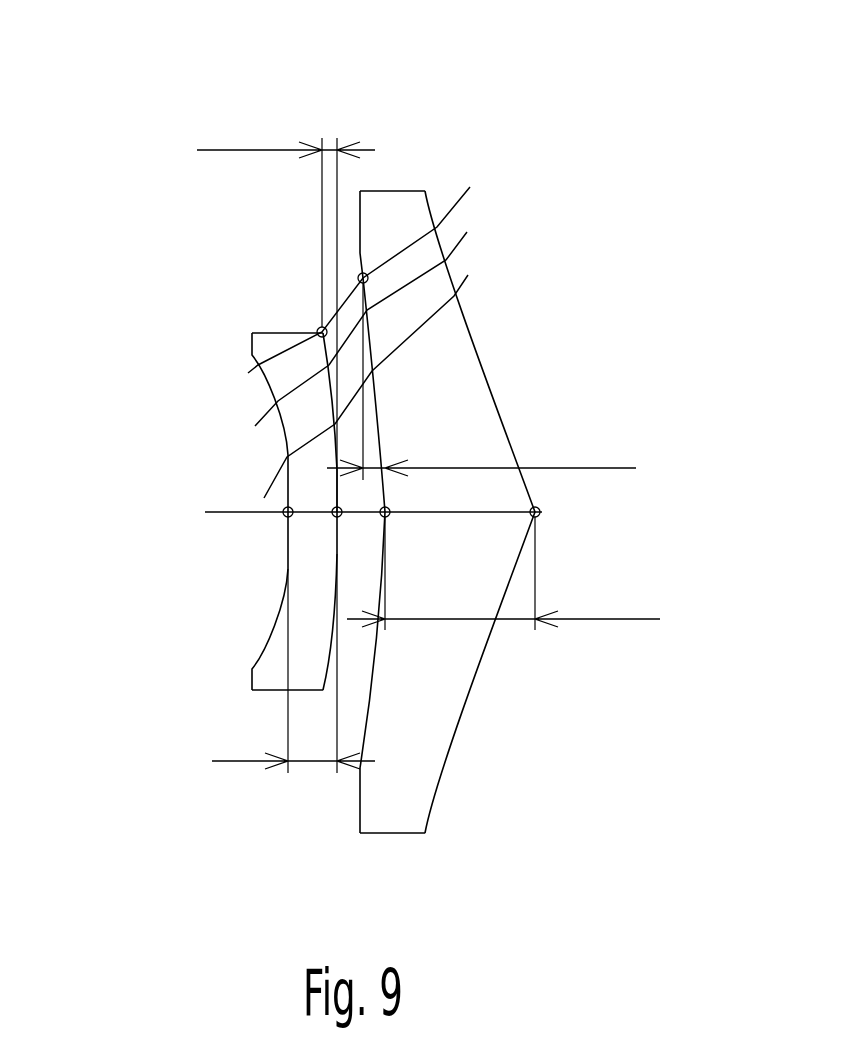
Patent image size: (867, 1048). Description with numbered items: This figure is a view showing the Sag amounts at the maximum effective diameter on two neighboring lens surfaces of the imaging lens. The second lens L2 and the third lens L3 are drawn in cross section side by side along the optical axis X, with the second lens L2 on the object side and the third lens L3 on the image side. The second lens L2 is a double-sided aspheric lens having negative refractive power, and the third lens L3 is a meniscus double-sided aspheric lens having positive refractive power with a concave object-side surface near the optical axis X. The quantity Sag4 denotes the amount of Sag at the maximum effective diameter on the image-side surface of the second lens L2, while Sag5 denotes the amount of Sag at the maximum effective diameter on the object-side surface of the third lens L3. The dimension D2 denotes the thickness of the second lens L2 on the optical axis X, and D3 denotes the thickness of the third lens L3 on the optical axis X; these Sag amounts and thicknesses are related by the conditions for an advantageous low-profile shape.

The second lens L2 is at (252, 333).
The third lens L3 is at (410, 191).
The optical axis X is at (212, 512).
The amount of Sag at maximum effective diameter on the image-side surface of the sec Sag4 is at (252, 293).
The amount of Sag at maximum effective diameter on the object-side surface of the th Sag5 is at (524, 381).
The thickness on the optical axis of the second lens D2 is at (273, 695).
The thickness on the optical axis of the third lens D3 is at (505, 573).